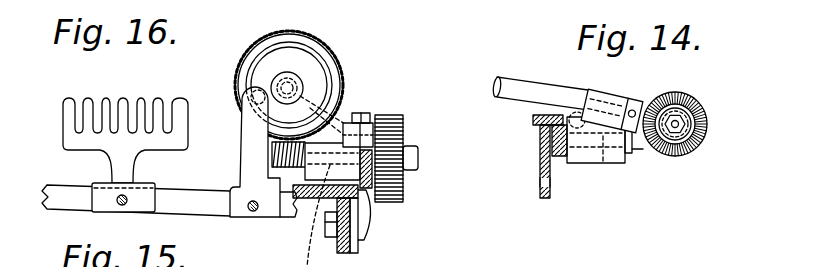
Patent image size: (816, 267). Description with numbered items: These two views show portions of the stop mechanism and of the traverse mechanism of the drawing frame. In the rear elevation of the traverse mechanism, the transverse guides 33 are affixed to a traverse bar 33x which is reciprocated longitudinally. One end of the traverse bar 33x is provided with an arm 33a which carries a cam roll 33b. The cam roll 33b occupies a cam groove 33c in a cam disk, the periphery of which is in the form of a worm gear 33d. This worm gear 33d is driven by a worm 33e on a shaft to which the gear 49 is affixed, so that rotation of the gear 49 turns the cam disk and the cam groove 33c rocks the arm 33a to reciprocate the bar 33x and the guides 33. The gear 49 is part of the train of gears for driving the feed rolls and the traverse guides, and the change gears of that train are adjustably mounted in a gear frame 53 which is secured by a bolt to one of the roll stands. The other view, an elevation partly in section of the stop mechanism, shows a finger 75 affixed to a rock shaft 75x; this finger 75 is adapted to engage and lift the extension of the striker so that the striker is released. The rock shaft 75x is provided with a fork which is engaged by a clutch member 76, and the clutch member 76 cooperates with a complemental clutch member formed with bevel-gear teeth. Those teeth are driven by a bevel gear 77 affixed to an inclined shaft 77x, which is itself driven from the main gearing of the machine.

In FIG. 16, the transverse guides 33 is at (129, 106).
In FIG. 16, the traverse bar 33x is at (61, 194).
In FIG. 16, the arm 33a is at (248, 168).
In FIG. 16, the cam roll 33b is at (256, 91).
In FIG. 16, the cam groove 33c is at (308, 69).
In FIG. 16, the worm gear 33d is at (345, 87).
In FIG. 16, the worm 33e is at (288, 162).
In FIG. 16, the gear 49 is at (403, 200).
In FIG. 16, the gear frame 53 is at (367, 206).
In FIG. 14, the inclined shaft 77x is at (515, 86).
In FIG. 14, the bevel gear 77 is at (650, 97).
In FIG. 14, the finger 75 is at (563, 148).
In FIG. 14, the rock shaft 75x is at (603, 146).
In FIG. 14, the clutch member 76 is at (685, 156).